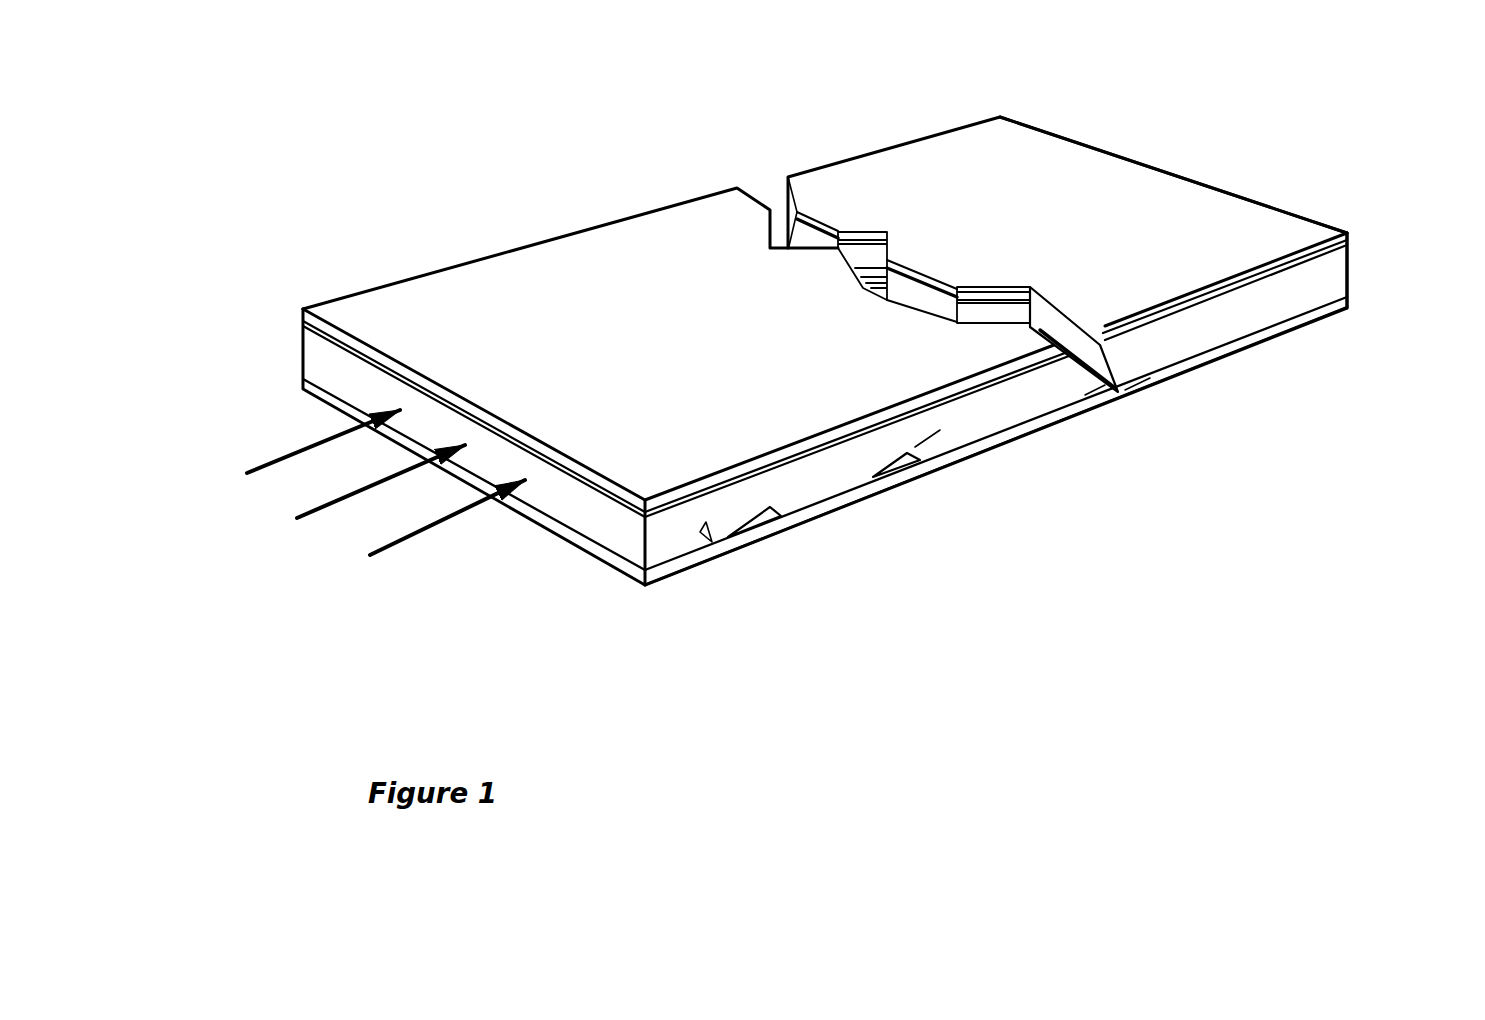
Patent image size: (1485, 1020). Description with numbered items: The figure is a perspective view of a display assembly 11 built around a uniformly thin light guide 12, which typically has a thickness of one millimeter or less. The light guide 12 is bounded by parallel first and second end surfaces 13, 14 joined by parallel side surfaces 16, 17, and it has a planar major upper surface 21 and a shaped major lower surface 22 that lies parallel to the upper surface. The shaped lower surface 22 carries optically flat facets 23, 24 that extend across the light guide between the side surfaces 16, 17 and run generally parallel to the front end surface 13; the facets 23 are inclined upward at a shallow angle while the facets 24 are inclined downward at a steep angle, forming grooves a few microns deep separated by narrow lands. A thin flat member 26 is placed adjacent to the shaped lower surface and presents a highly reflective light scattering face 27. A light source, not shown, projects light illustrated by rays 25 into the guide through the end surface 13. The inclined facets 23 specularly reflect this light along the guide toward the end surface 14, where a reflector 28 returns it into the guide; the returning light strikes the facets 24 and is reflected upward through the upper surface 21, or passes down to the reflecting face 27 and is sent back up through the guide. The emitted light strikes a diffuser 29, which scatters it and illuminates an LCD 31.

The display assembly 11 is at (660, 188).
The light guide 12 is at (377, 387).
The first end surface 13 is at (645, 547).
The second end surface 14 is at (1338, 282).
The side surface 16 is at (303, 345).
The side surface 17 is at (702, 528).
The planar major upper surface 21 is at (1213, 307).
The shaped major lower surface 22 is at (827, 503).
The optically flat facet 23 is at (913, 477).
The optically flat facet 24 is at (928, 435).
The light rays 25 is at (386, 490).
The thin flat member 26 is at (1098, 398).
The reflective light scattering face 27 is at (1147, 383).
The reflector 28 is at (1345, 265).
The diffuser 29 is at (1347, 243).
The LCD 31 is at (808, 303).